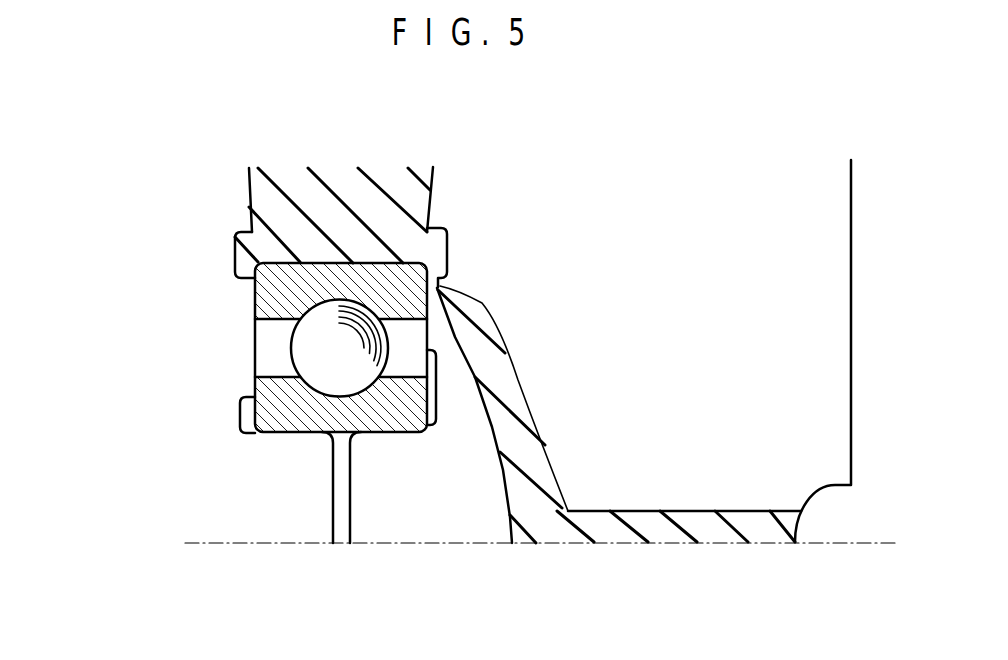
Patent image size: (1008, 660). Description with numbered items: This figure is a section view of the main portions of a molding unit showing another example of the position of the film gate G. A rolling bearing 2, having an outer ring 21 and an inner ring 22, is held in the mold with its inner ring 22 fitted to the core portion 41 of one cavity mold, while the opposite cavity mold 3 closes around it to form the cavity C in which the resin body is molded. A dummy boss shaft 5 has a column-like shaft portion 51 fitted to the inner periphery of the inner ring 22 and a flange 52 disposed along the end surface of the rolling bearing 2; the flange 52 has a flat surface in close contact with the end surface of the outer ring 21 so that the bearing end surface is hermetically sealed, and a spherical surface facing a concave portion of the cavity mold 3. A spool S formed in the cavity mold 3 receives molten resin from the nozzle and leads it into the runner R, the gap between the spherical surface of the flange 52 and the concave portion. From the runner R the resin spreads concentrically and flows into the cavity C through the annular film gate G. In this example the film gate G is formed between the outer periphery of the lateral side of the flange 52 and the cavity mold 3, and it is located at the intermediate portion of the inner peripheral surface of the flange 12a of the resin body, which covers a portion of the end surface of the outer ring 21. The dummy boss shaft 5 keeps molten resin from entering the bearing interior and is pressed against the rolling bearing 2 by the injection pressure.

The rolling bearing 2 is at (251, 260).
The outer ring 21 is at (275, 291).
The inner ring 22 is at (251, 390).
The cavity C is at (323, 207).
The flange 12a is at (445, 226).
The film gate G is at (441, 287).
The cavity mold 3 is at (704, 353).
The dummy boss shaft 5 is at (538, 458).
The shaft portion 51 is at (373, 520).
The flange 52 is at (450, 378).
The core portion 41 is at (315, 513).
The runner R is at (518, 433).
The spool S is at (677, 520).